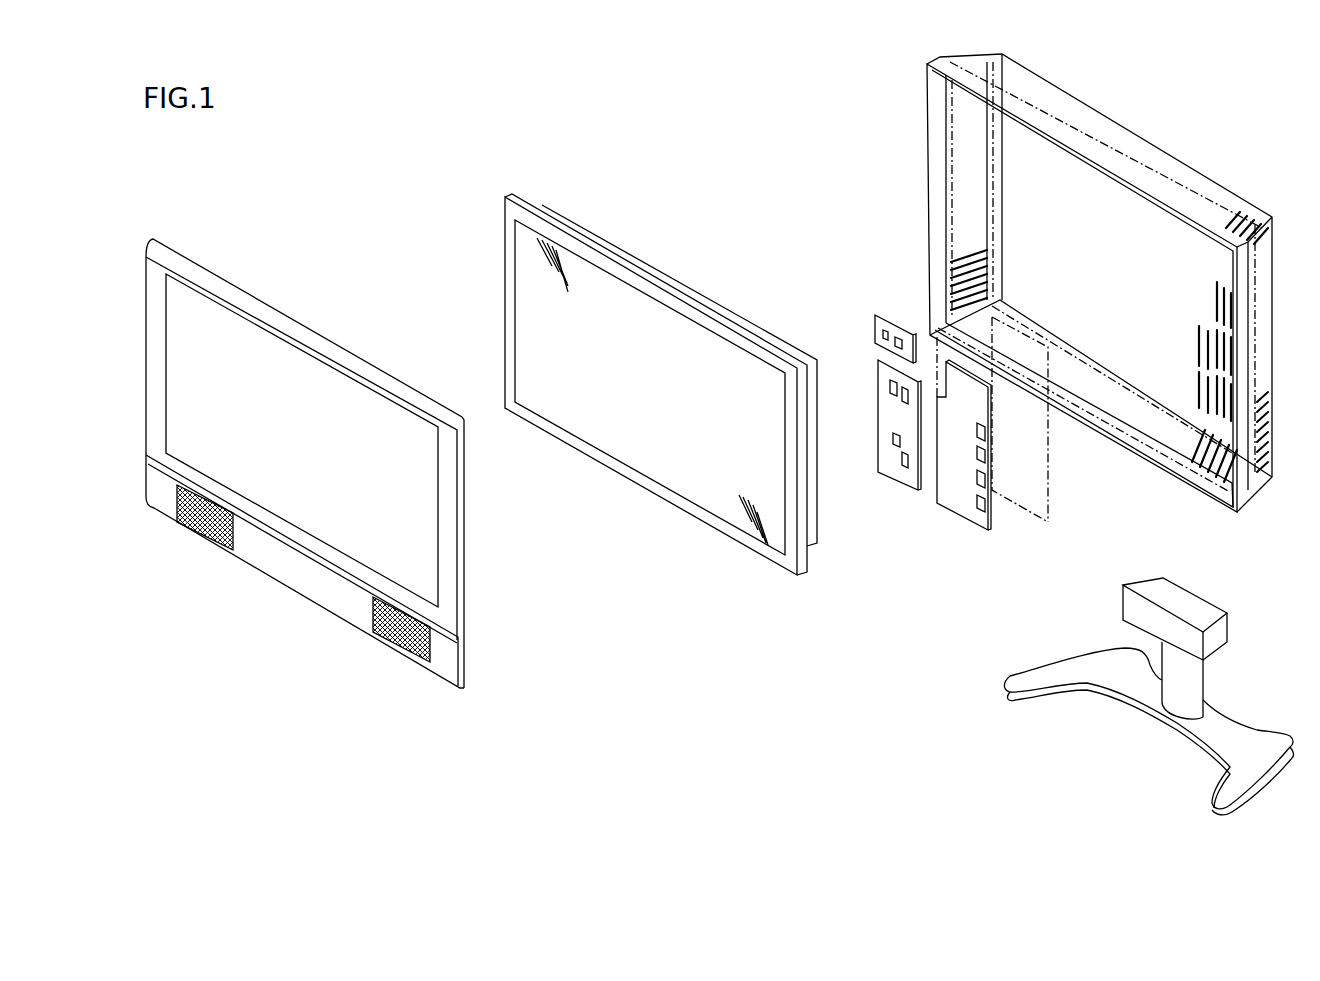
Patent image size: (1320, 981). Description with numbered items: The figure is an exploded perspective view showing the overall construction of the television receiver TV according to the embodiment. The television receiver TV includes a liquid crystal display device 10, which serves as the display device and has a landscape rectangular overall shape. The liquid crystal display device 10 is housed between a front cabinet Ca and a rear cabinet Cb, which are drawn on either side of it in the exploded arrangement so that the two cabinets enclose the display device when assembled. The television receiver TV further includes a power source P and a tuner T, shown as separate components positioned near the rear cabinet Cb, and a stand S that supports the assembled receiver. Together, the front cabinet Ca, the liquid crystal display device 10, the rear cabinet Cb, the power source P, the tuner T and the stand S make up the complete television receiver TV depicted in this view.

The television receiver TV is at (681, 141).
The front cabinet Ca is at (287, 320).
The liquid crystal display device 10 is at (607, 242).
The rear cabinet Cb is at (1094, 130).
The tuner T is at (892, 480).
The power source P is at (955, 513).
The stand S is at (1062, 683).